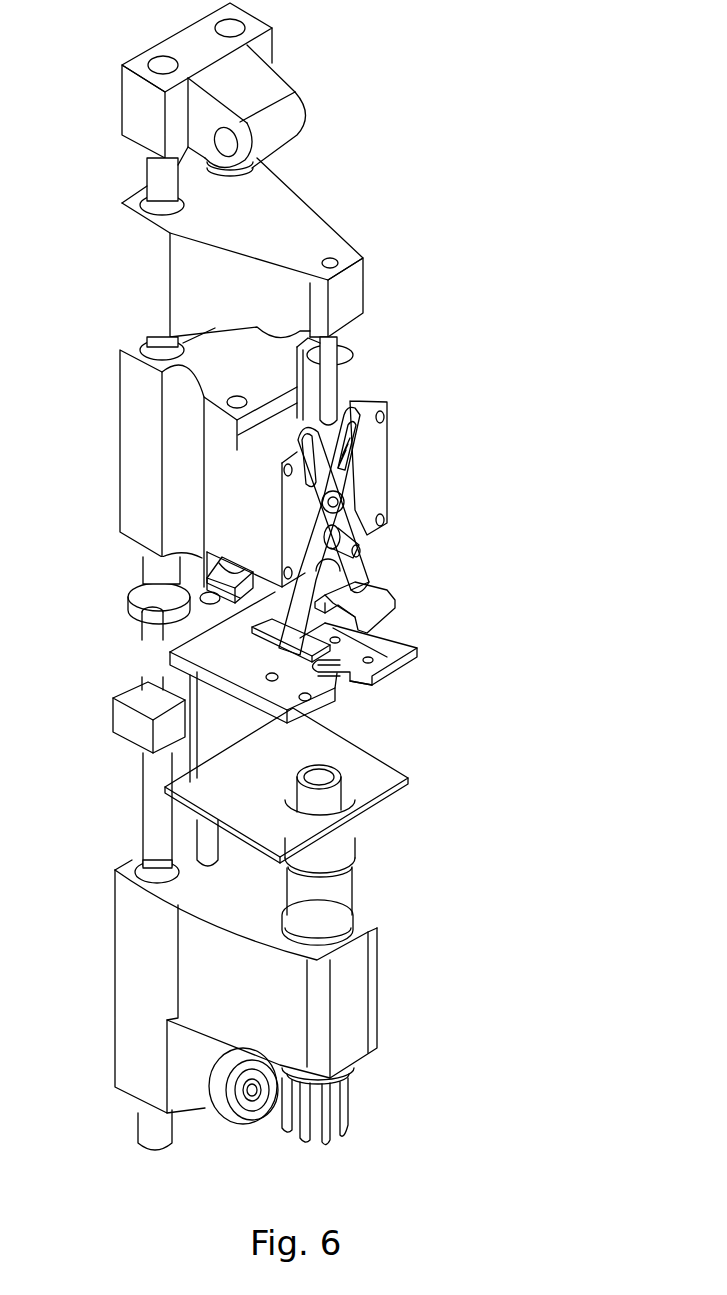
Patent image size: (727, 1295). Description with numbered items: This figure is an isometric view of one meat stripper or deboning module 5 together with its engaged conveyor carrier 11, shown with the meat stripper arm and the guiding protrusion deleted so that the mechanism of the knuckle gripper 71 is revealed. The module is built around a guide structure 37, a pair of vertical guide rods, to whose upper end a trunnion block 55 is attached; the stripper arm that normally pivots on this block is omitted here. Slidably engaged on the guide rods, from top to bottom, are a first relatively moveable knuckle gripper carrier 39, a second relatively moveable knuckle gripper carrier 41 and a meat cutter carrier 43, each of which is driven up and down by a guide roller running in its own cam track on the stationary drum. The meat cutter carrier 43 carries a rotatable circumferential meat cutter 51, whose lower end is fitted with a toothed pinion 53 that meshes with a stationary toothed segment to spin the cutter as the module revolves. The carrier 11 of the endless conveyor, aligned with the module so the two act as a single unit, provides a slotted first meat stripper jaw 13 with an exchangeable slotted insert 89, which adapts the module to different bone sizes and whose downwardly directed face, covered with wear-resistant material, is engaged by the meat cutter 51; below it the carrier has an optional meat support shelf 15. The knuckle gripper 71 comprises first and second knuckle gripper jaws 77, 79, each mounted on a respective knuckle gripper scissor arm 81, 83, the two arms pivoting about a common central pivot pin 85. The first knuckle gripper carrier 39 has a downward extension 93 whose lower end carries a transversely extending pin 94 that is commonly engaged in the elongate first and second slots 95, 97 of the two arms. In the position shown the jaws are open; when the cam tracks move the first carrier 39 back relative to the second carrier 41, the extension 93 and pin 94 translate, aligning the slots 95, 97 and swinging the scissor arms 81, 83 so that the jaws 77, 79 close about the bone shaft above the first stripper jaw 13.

The meat stripper module 5 is at (364, 78).
The trunnion block 55 is at (135, 105).
The guide structure 37 is at (160, 170).
The first relatively moveable knuckle gripper carrier 39 is at (145, 267).
The second relatively moveable knuckle gripper carrier 41 is at (145, 437).
The second knuckle gripper scissor arm 83 is at (313, 563).
The second knuckle gripper jaw 79 is at (272, 627).
The first meat stripper jaw 13 is at (268, 693).
The carrier 11 is at (218, 732).
The meat cutter carrier 43 is at (138, 973).
The extension 93 is at (330, 388).
The second slot 97 is at (348, 437).
The first slot 95 is at (308, 462).
The transversely extending pin 94 is at (333, 500).
The common central pivot pin 85 is at (357, 550).
The first knuckle gripper scissor arm 81 is at (362, 580).
The first knuckle gripper jaw 77 is at (368, 611).
The knuckle gripper 71 is at (378, 635).
The slotted insert 89 is at (357, 668).
The meat support shelf 15 is at (380, 777).
The rotatable circumferential meat cutter 51 is at (333, 888).
The toothed pinion 53 is at (343, 1107).